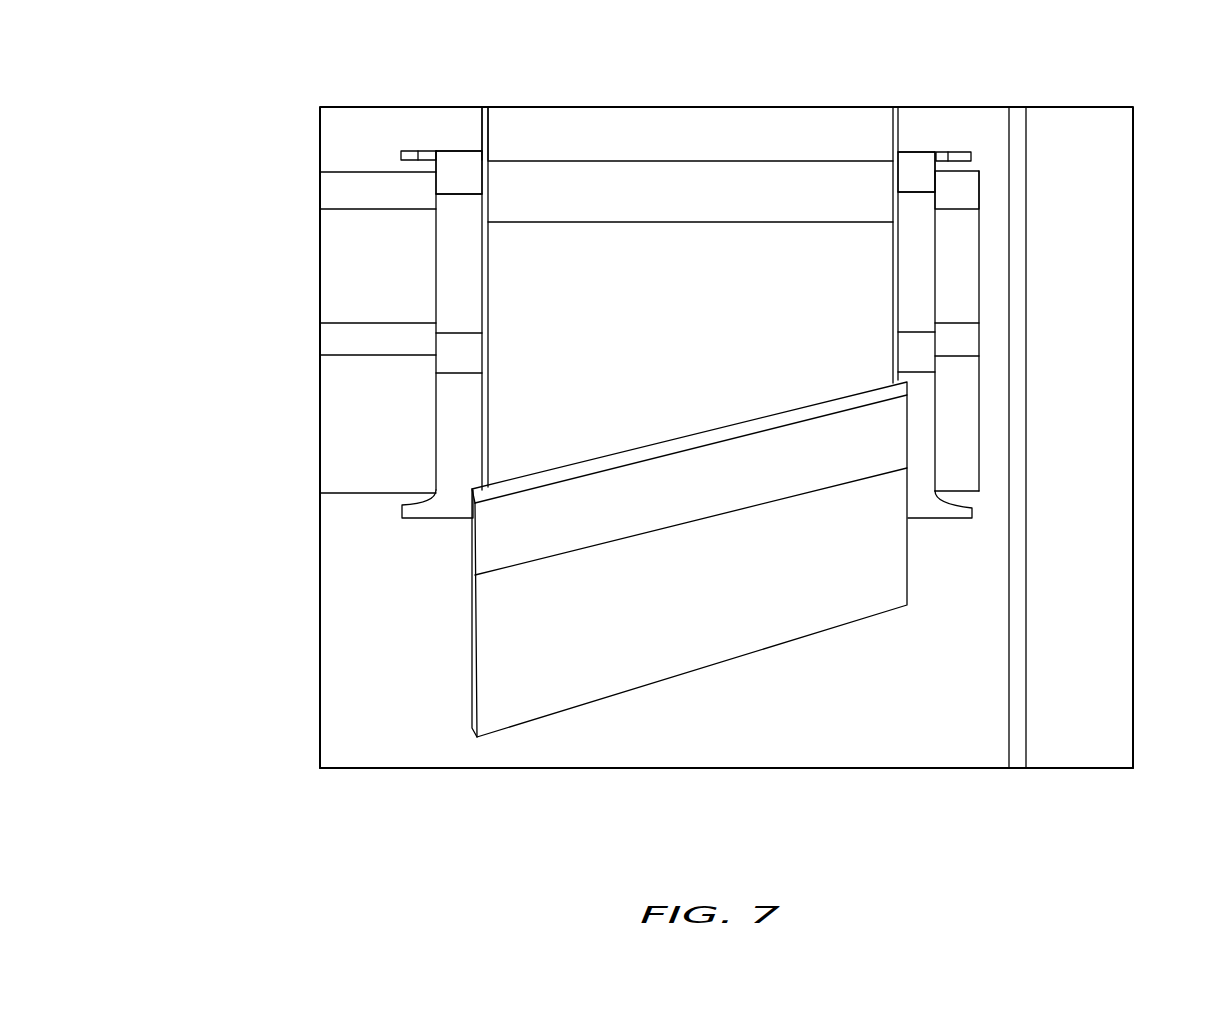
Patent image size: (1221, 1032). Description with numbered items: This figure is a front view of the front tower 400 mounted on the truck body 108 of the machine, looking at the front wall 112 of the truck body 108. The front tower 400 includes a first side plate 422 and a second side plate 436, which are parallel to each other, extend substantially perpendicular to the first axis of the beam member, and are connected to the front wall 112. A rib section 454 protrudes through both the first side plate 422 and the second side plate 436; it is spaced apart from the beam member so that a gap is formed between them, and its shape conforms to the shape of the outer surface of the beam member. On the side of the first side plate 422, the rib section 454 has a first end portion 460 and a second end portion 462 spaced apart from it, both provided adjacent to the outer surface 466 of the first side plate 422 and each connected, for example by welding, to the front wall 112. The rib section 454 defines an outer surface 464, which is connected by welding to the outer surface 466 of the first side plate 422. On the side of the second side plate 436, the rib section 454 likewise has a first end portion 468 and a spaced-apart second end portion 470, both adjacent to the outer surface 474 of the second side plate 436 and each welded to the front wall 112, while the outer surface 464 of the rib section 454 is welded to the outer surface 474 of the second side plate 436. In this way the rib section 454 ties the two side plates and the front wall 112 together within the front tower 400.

The truck body 108 is at (1136, 108).
The front wall 112 is at (358, 667).
The front tower 400 is at (403, 127).
The first side plate 422 is at (488, 423).
The second side plate 436 is at (898, 287).
The rib section 454 is at (452, 274).
The first end portion 460 is at (400, 154).
The second end portion 462 is at (437, 510).
The outer surface 464 is at (449, 148).
The outer surface 466 is at (482, 120).
The first end portion 468 is at (971, 155).
The second end portion 470 is at (970, 501).
The outer surface 474 is at (899, 128).